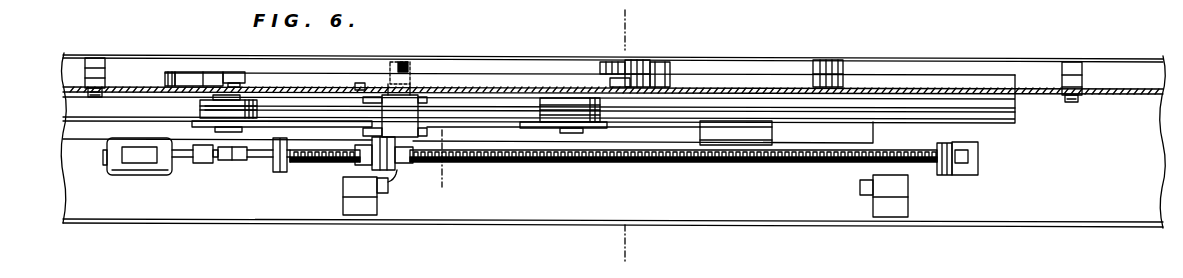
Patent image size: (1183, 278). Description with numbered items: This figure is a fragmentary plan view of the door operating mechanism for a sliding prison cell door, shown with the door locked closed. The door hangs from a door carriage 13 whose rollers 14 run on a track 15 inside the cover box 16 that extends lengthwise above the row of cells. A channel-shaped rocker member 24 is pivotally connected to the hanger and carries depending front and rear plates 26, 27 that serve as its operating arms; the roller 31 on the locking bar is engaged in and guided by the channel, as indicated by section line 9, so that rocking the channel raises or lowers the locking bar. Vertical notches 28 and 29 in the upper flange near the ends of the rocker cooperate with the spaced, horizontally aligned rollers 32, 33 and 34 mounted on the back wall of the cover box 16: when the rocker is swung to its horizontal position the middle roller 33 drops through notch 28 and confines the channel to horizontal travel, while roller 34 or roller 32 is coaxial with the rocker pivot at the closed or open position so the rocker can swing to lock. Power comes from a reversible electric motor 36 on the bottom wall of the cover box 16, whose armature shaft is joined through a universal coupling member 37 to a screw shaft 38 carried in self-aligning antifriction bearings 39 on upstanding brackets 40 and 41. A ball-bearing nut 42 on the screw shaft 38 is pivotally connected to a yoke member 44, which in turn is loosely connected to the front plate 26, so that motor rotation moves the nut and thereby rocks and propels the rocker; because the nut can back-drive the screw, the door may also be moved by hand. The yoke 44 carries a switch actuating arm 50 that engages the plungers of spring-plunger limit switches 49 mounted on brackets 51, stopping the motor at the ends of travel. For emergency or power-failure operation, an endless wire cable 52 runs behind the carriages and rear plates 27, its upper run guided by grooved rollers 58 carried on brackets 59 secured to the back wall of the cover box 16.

The section line 9- 9 is at (612, 247).
The door carriage 13 is at (246, 162).
The rollers 14 is at (203, 105).
The track 15 is at (983, 105).
The cover box 16 is at (938, 66).
The rocker member 24 is at (449, 72).
The front plate 26 is at (395, 116).
The rear plate 27 is at (395, 62).
The vertical notch 28 is at (656, 84).
The vertical notch 29 is at (204, 76).
The roller 31 is at (600, 70).
The roller 32 is at (848, 62).
The roller 33 is at (646, 61).
The roller 34 is at (402, 62).
The reversible electric motor 36 is at (118, 167).
The universal coupling member 37 is at (205, 166).
The screw shaft 38 is at (758, 165).
The self-aligning antifriction bearings 39 is at (282, 173).
The upstanding bracket 40 is at (955, 176).
The upstanding bracket 41 is at (275, 170).
The ball-bearing nut 42 is at (440, 178).
The yoke member 44 is at (362, 168).
The limit switches 49 is at (382, 196).
The switch actuating arm 50 is at (396, 180).
The brackets 51 is at (345, 207).
The endless wire cable 52 is at (130, 86).
The grooved rollers 58 is at (88, 96).
The brackets 59 is at (92, 65).